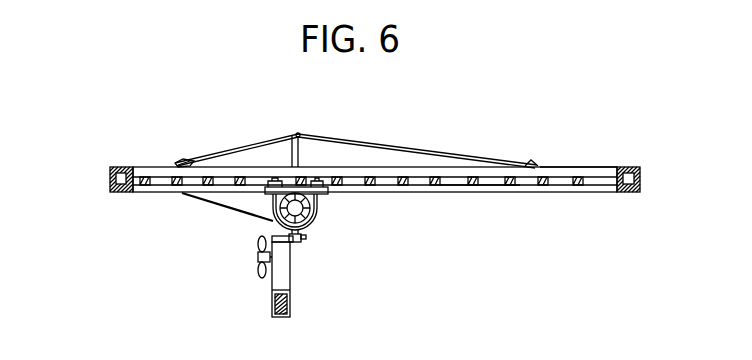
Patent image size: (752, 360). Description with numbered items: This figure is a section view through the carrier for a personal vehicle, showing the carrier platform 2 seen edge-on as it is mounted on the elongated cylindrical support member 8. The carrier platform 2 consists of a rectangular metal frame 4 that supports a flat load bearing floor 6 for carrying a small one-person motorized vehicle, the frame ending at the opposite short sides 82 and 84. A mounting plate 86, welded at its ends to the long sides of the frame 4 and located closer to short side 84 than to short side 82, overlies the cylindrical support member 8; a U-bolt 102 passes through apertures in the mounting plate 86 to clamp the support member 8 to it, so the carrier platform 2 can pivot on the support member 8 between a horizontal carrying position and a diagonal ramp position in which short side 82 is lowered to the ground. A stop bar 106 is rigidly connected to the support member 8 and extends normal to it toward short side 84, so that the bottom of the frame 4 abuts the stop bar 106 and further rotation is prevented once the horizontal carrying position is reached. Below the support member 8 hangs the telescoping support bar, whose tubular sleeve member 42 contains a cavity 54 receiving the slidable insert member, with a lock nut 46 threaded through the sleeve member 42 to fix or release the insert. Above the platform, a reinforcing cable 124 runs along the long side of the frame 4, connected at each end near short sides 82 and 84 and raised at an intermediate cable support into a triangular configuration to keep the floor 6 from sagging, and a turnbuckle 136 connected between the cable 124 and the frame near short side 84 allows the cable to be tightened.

The carrier platform 2 is at (158, 172).
The rectangular metal frame 4 is at (570, 167).
The flat load bearing floor 6 is at (470, 182).
The elongated cylindrical support member 8 is at (312, 222).
The tubular sleeve member 42 is at (292, 268).
The lock nut 46 is at (258, 256).
The cavity 54 is at (286, 312).
The short side 82 is at (641, 179).
The short side 84 is at (110, 178).
The mounting plate 86 is at (287, 190).
The U-bolt 102 is at (318, 208).
The stop bar 106 is at (222, 200).
The reinforcing cable 124 is at (243, 146).
The turnbuckle 136 is at (179, 161).